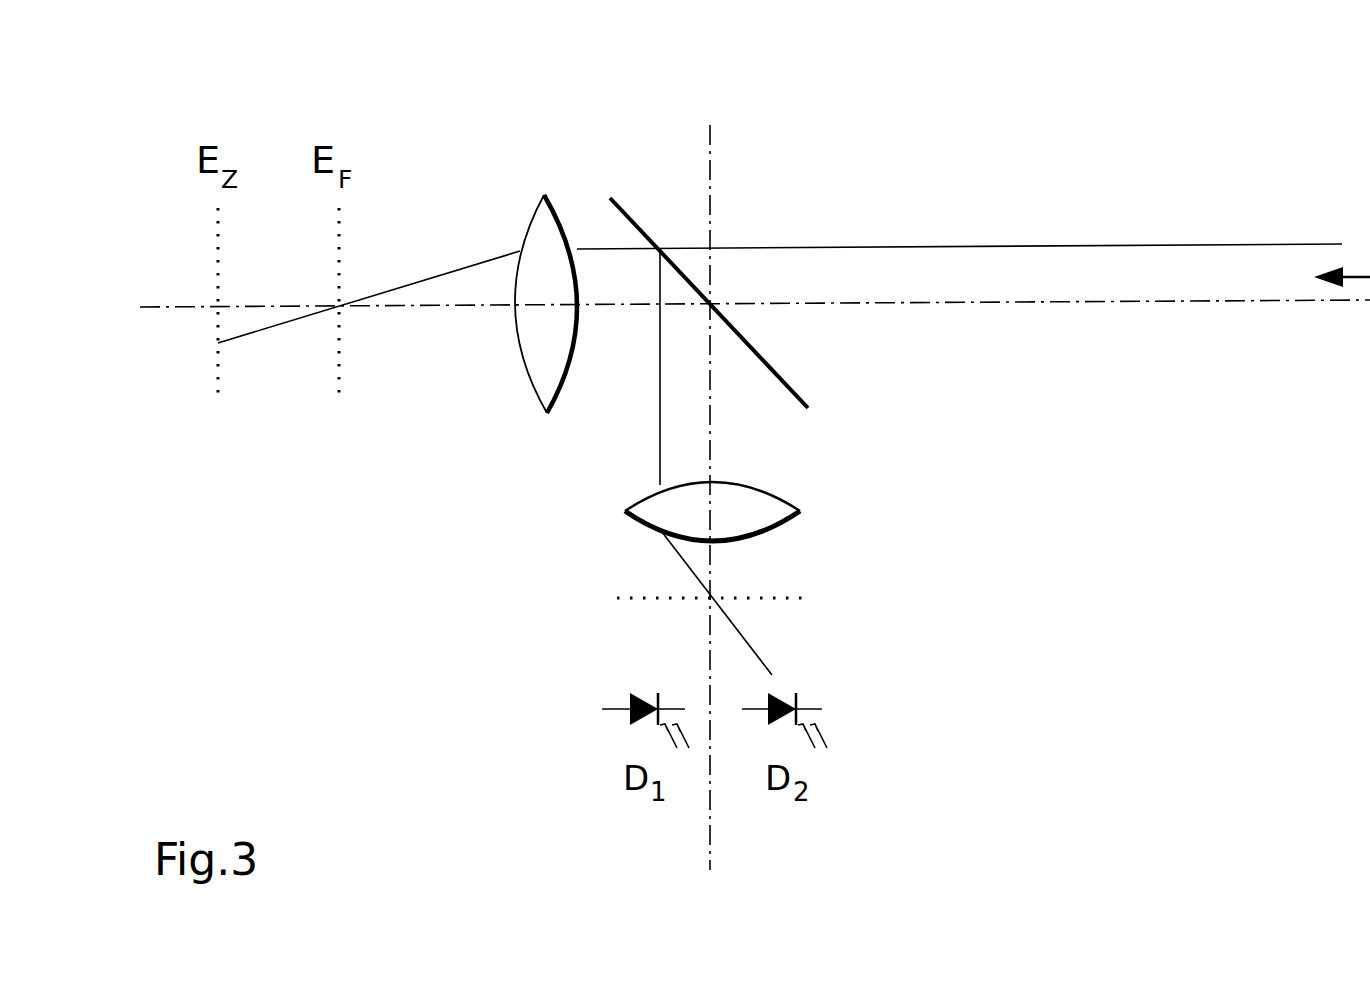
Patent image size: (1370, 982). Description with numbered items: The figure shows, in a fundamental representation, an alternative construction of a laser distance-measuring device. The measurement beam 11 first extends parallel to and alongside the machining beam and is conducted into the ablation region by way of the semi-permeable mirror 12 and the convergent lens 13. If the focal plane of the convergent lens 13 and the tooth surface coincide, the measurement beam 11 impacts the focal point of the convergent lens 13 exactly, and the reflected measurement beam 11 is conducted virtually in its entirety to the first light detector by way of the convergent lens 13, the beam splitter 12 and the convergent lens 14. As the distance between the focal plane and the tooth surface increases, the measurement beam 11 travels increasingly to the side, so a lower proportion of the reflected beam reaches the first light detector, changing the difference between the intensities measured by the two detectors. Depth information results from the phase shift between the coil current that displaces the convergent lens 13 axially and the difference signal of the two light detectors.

The measurement beam 11 is at (435, 273).
The semi-permeable mirror 12 is at (638, 225).
The convergent lens 13 is at (555, 215).
The convergent lens 14 is at (783, 527).